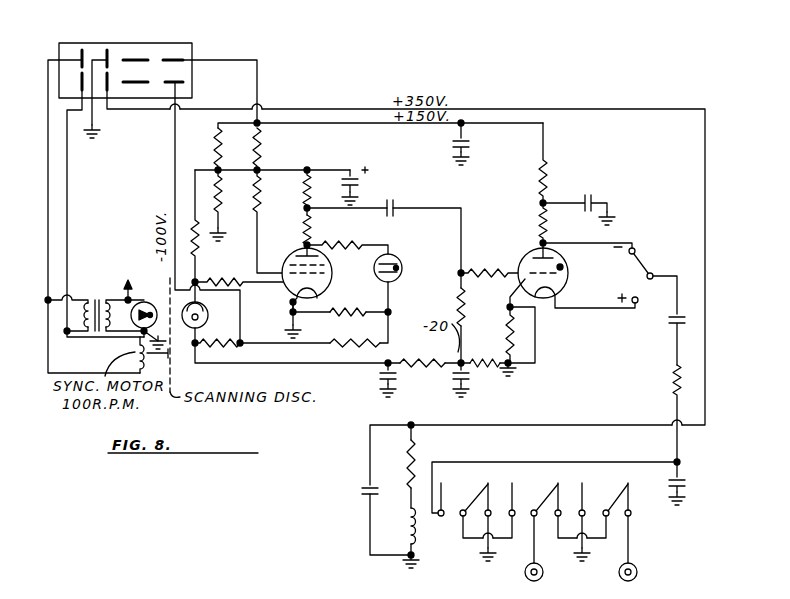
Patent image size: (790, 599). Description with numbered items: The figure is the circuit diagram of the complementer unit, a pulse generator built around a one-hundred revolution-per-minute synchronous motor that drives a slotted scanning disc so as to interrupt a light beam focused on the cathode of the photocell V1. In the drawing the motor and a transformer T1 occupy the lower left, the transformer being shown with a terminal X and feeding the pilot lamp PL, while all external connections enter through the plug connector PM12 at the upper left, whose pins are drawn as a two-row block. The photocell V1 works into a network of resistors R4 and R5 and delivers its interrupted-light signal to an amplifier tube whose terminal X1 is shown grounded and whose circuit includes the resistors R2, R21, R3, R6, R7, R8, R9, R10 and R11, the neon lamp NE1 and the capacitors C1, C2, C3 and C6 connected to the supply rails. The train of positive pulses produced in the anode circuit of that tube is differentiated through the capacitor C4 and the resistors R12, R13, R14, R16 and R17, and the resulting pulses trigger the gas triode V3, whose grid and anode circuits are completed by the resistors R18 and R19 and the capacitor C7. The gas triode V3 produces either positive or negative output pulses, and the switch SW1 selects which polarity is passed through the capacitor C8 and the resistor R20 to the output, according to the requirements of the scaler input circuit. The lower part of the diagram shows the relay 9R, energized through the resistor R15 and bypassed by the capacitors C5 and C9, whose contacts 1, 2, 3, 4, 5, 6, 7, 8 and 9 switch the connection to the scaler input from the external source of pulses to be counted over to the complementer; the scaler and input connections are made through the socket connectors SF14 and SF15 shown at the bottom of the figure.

The plug connector PM12 is at (125, 61).
The transformer T1 is at (96, 307).
The terminal X is at (128, 281).
The pilot lamp PL is at (149, 314).
The photocell V1 is at (213, 314).
The resistor R4 300 ohm R4 is at (239, 275).
The resistor R5 680K R5 is at (251, 351).
The resistor R11 1M R11 is at (340, 351).
The resistor R2 1.5M R2 is at (201, 149).
The resistor R21 50K R21 is at (276, 149).
The resistor R3 220K R3 is at (237, 205).
The resistor R6 220K R6 is at (278, 221).
The resistor R7 50K R7 is at (326, 192).
The resistor R8 100K R8 is at (332, 229).
The capacitor C1 8 mfd C1 is at (387, 186).
The capacitor C2 .01 C2 is at (422, 203).
The capacitor C6 .01 C6 is at (493, 144).
The terminal X1 is at (307, 306).
The resistor R9 1M R9 is at (347, 255).
The neon lamp NE1 is at (410, 268).
The resistor R10 470K R10 is at (346, 315).
The resistor R12 100K R12 is at (431, 355).
The capacitor C3 .01 C3 is at (356, 380).
The capacitor C4 .01 C4 is at (452, 372).
The resistor R13 4.7M R13 is at (435, 305).
The resistor R14 100K R14 is at (503, 265).
The resistor R16 220K R16 is at (492, 364).
The resistor R17 1K R17 is at (493, 333).
The gas triode V3 is at (574, 278).
The resistor R18 20M R18 is at (586, 164).
The resistor R19 1K R19 is at (566, 225).
The capacitor C7 .005 C7 is at (603, 201).
The switch SW1 is at (619, 278).
The capacitor C8 330 mmf C8 is at (667, 316).
The resistor R20 3.3K R20 is at (633, 421).
The capacitor C9 .001 C9 is at (685, 482).
The resistor R15 33K R15 is at (422, 449).
The relay 9R is at (395, 526).
The capacitor C5 .001 C5 is at (330, 494).
The switch contact 1 is at (444, 508).
The switch contact 2 is at (474, 511).
The switch contact 3 is at (492, 522).
The switch contact 4 is at (510, 510).
The switch contact 5 is at (544, 523).
The switch contact 6 is at (566, 510).
The switch contact 7 is at (586, 522).
The switch contact 8 is at (607, 511).
The switch contact 9 is at (634, 523).
The scaler output connector SF14 is at (522, 571).
The input connector SF15 is at (618, 564).